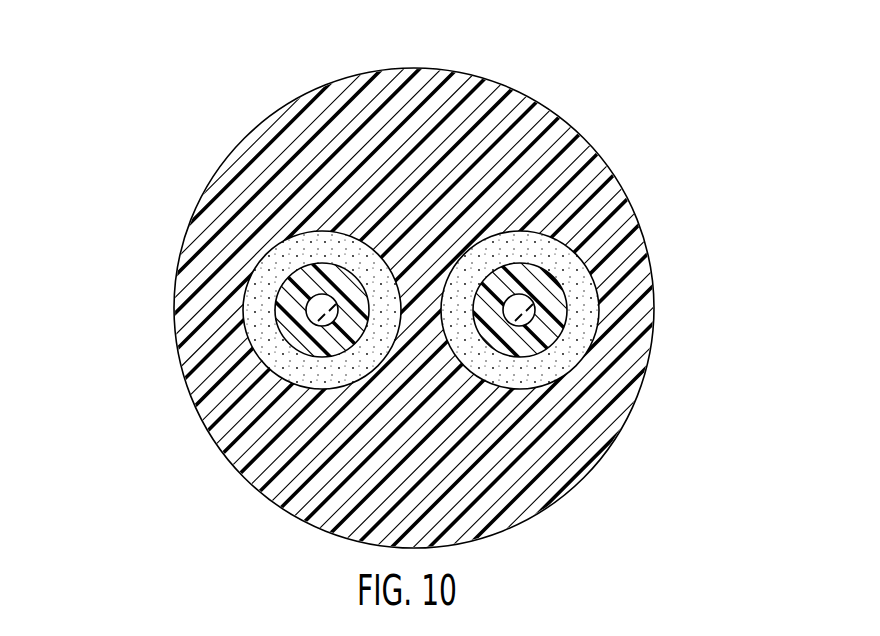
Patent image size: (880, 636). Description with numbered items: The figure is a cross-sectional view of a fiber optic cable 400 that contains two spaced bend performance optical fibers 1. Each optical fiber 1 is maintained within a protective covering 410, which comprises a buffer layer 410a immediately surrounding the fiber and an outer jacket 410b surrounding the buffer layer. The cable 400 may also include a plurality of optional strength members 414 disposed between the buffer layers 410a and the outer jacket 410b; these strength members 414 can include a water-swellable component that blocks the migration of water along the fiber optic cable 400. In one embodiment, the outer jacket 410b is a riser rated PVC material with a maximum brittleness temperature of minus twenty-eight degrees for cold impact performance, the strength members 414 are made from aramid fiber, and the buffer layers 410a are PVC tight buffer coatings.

The fiber optic cable 400 is at (476, 49).
The protective covering 410 is at (408, 318).
The buffer layer 410a is at (310, 262).
The outer jacket 410b is at (183, 270).
The strength members 414 is at (278, 362).
The optical fiber 1 is at (310, 308).